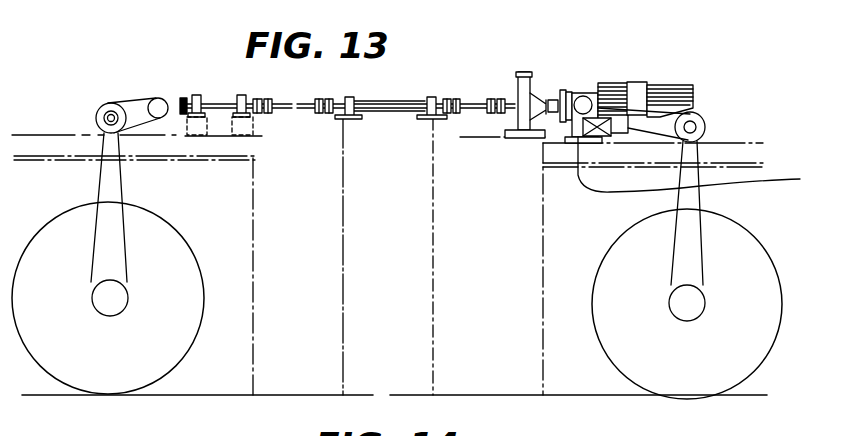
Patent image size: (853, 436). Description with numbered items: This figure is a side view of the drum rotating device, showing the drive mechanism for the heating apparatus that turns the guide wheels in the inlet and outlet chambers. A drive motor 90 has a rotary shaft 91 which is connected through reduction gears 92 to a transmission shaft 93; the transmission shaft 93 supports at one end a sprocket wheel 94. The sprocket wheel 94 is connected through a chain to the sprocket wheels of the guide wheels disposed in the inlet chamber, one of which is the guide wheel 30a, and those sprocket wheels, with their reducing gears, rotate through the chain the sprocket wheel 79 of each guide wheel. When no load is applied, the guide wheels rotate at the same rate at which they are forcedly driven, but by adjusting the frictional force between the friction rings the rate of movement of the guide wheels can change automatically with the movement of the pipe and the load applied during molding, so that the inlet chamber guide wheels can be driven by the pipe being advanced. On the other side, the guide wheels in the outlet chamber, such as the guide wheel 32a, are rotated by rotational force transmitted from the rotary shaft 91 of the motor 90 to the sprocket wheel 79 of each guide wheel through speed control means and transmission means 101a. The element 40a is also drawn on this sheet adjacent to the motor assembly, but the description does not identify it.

The sprocket wheel 94 is at (182, 97).
The transmission shaft 93 is at (408, 106).
The reduction gears 92 is at (525, 72).
The rotary shaft 91 is at (562, 92).
The drive motor 90 is at (632, 82).
The transmission means 101a is at (703, 109).
The frame housing 40a is at (711, 165).
The guide wheel 32a is at (747, 240).
The sprocket wheel 79 is at (110, 308).
The guide wheel 30a is at (205, 310).